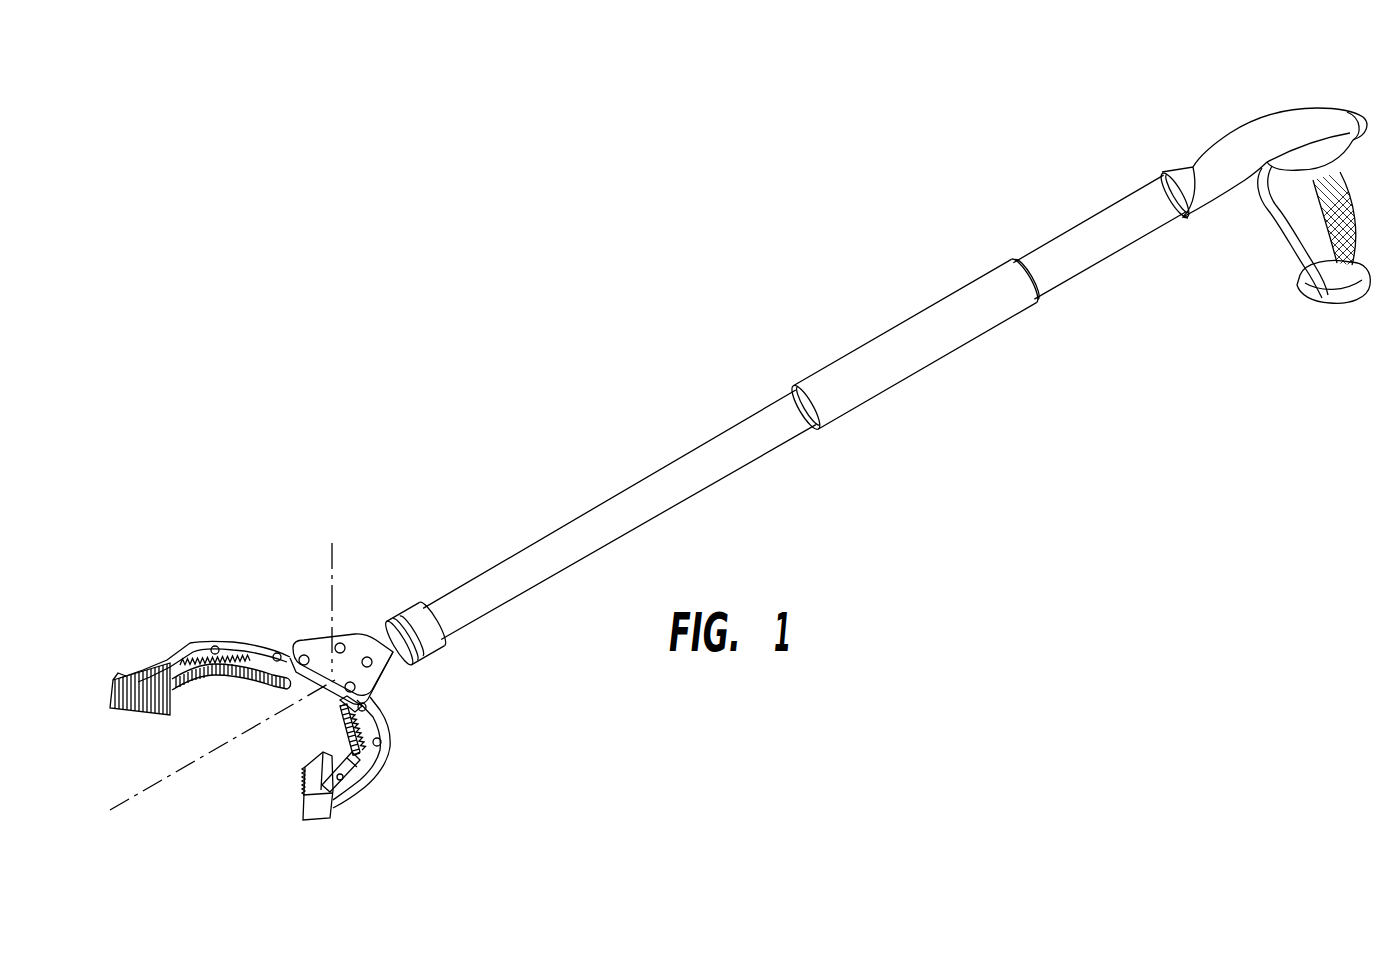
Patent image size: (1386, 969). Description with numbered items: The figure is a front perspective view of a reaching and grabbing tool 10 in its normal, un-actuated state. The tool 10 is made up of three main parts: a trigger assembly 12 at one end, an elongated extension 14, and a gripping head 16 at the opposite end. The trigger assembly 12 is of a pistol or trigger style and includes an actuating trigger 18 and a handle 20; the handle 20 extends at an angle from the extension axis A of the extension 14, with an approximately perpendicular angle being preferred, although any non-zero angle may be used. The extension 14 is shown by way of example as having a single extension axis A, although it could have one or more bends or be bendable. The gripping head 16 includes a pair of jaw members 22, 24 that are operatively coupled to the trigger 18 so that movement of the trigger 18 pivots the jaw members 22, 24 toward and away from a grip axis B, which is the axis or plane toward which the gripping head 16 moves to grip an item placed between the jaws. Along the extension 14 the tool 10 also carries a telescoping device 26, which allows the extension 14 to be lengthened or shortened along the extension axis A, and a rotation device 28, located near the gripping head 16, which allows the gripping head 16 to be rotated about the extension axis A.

The reaching and grabbing tool 10 is at (545, 282).
The trigger assembly 12 is at (1228, 112).
The extension 14 is at (748, 400).
The gripping head 16 is at (224, 572).
The actuating trigger 18 is at (1275, 231).
The handle 20 is at (1340, 301).
The jaw member 22 is at (182, 630).
The jaw member 24 is at (372, 808).
The telescoping device 26 is at (918, 313).
The rotation device 28 is at (392, 604).
The extension axis A is at (165, 778).
The grip axis B is at (332, 557).